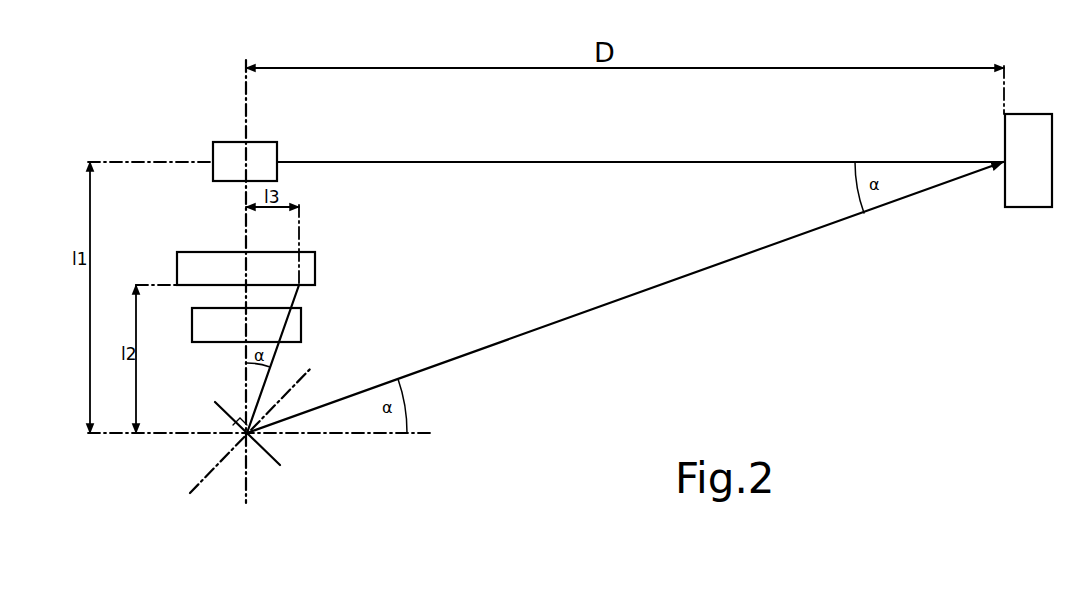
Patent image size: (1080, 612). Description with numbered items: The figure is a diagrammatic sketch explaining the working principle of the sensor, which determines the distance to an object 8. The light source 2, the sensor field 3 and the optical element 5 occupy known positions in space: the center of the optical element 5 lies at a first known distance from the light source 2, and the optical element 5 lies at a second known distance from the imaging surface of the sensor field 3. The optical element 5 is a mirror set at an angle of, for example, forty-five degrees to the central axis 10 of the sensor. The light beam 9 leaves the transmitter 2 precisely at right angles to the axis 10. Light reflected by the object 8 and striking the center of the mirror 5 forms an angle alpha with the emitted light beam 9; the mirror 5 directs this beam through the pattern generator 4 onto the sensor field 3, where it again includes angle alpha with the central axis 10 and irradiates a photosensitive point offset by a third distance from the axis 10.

The light source 2 is at (270, 153).
The sensor field 3 is at (310, 270).
The pattern generator 4 is at (292, 330).
The optical element 5 is at (278, 465).
The object 8 is at (1028, 195).
The light beam 9 is at (647, 162).
The central axis 10 is at (246, 113).